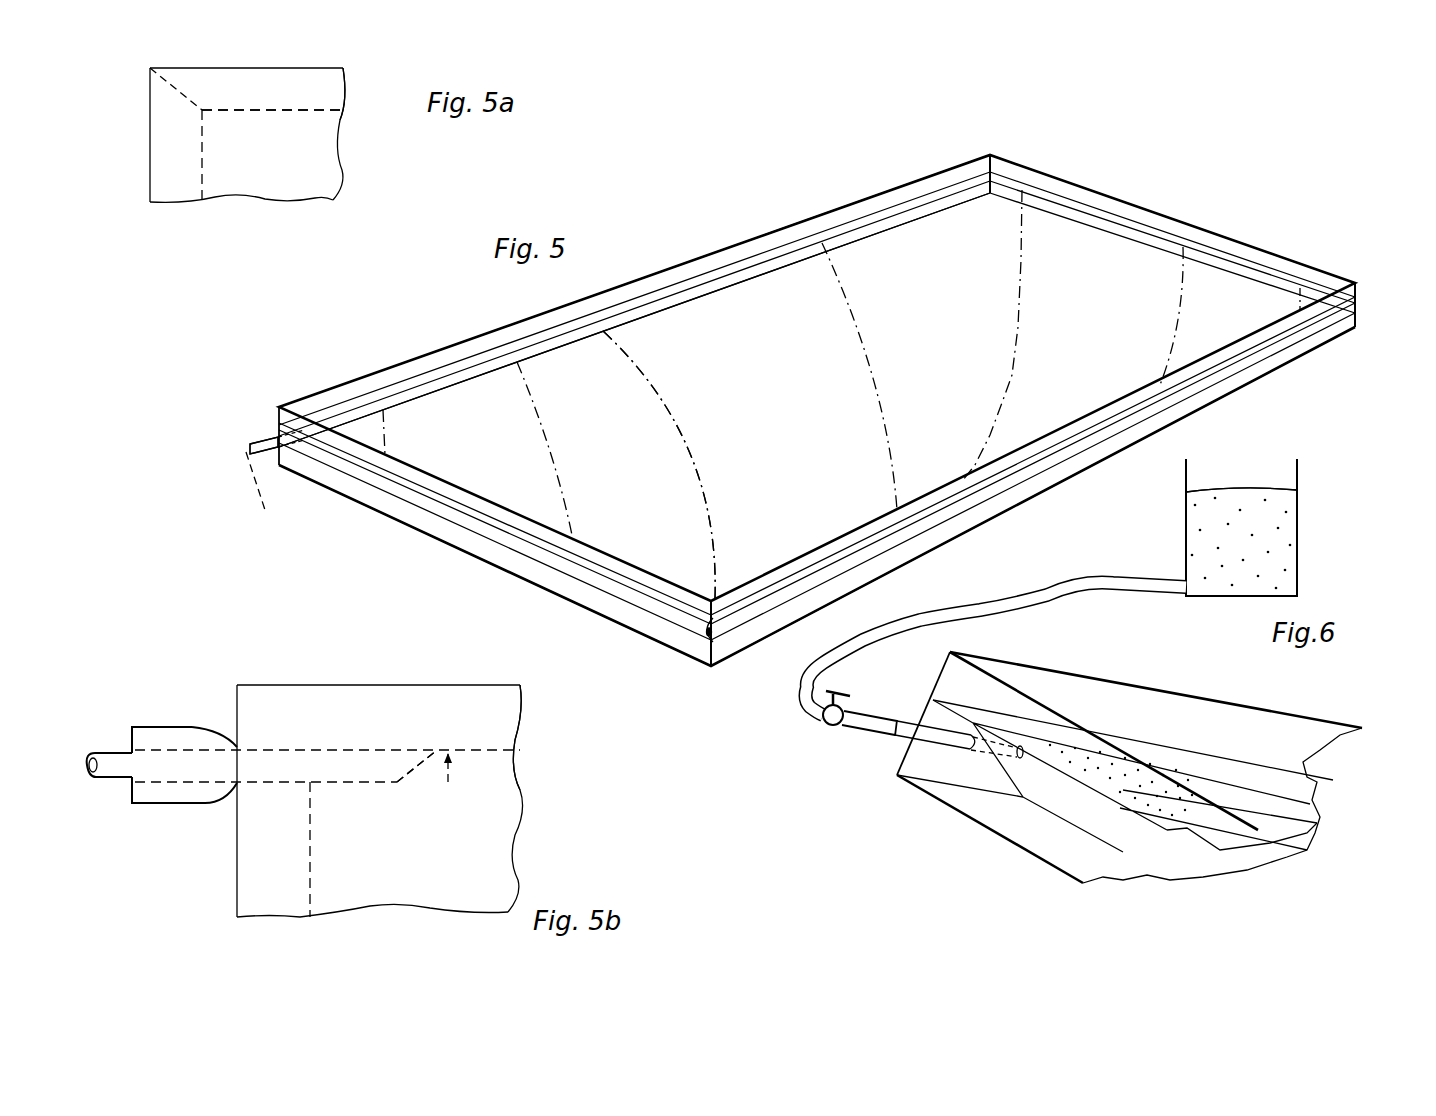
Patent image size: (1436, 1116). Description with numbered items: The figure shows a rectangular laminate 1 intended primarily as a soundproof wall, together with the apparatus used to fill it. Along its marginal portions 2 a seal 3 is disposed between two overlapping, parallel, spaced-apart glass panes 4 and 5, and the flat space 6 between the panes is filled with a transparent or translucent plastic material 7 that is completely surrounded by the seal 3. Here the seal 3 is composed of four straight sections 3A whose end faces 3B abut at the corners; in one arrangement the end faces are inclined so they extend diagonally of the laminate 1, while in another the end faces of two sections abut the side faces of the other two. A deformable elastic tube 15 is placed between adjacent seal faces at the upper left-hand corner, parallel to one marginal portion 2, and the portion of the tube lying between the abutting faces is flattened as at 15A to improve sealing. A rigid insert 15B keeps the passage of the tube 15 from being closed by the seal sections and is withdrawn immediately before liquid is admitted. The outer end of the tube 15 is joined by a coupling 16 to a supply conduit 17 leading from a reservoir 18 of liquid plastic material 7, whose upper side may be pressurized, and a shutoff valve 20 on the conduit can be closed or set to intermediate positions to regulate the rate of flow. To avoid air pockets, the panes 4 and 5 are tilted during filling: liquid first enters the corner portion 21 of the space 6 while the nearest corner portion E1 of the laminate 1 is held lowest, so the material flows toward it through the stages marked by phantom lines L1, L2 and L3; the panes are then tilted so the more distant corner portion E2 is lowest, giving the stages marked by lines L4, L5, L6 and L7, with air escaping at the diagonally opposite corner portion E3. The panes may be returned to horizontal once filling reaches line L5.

In FIG. 5, the laminate 1 is at (1212, 198).
In FIG. 5A, the marginal portion 2 is at (293, 66).
In FIG. 5, the marginal portion 2 is at (823, 209).
In FIG. 5B, the marginal portion 2 is at (446, 687).
In FIG. 5A, the seal 3 is at (210, 146).
In FIG. 5, the seal 3 is at (358, 396).
In FIG. 6, the seal 3 is at (1225, 770).
In FIG. 5A, the seal section 3A is at (340, 121).
In FIG. 5A, the end face 3B is at (182, 88).
In FIG. 5, the glass pane 4 is at (672, 634).
In FIG. 6, the glass pane 4 is at (1040, 845).
In FIG. 5A, the glass pane 5 is at (325, 173).
In FIG. 5, the glass pane 5 is at (733, 253).
In FIG. 5B, the glass pane 5 is at (497, 826).
In FIG. 6, the glass pane 5 is at (1110, 683).
In FIG. 5, the space 6 is at (673, 344).
In FIG. 6, the space 6 is at (1242, 790).
In FIG. 6, the plastic material 7 is at (1207, 527).
In FIG. 5, the tube 15 is at (275, 462).
In FIG. 5B, the tube 15 is at (166, 807).
In FIG. 6, the tube 15 is at (935, 756).
In FIG. 5B, the flattened portion 15A is at (352, 785).
In FIG. 5B, the insert 15B is at (113, 772).
In FIG. 5, the coupling 16 is at (258, 438).
In FIG. 6, the coupling 16 is at (888, 742).
In FIG. 5, the supply conduit 17 is at (266, 494).
In FIG. 6, the supply conduit 17 is at (950, 608).
In FIG. 6, the reservoir 18 is at (1284, 549).
In FIG. 6, the shutoff valve 20 is at (848, 690).
In FIG. 5, the corner portion of the space 21 is at (333, 418).
In FIG. 6, the corner portion of the space 21 is at (1053, 742).
In FIG. 5, the corner portion E1 is at (703, 689).
In FIG. 5, the corner portion E2 is at (995, 151).
In FIG. 5, the corner portion E3 is at (1362, 290).
In FIG. 5, the phantom line L1 is at (400, 426).
In FIG. 5, the phantom line L2 is at (560, 456).
In FIG. 5, the phantom line L3 is at (676, 402).
In FIG. 5, the phantom line L4 is at (886, 406).
In FIG. 5, the phantom line L5 is at (1017, 347).
In FIG. 5, the phantom line L6 is at (1183, 298).
In FIG. 5, the phantom line L7 is at (1304, 293).